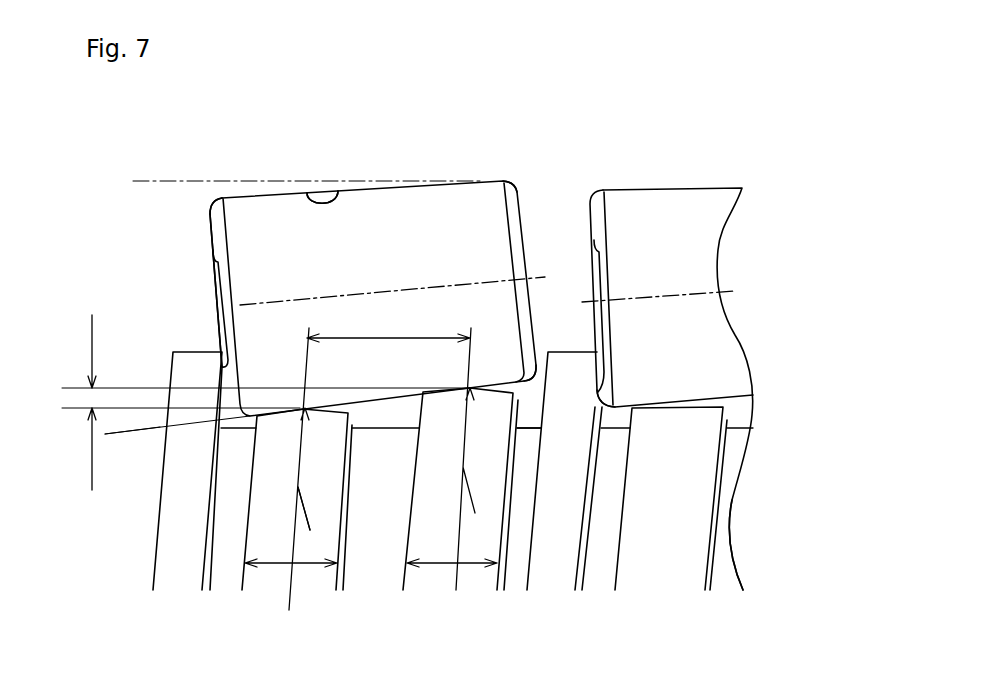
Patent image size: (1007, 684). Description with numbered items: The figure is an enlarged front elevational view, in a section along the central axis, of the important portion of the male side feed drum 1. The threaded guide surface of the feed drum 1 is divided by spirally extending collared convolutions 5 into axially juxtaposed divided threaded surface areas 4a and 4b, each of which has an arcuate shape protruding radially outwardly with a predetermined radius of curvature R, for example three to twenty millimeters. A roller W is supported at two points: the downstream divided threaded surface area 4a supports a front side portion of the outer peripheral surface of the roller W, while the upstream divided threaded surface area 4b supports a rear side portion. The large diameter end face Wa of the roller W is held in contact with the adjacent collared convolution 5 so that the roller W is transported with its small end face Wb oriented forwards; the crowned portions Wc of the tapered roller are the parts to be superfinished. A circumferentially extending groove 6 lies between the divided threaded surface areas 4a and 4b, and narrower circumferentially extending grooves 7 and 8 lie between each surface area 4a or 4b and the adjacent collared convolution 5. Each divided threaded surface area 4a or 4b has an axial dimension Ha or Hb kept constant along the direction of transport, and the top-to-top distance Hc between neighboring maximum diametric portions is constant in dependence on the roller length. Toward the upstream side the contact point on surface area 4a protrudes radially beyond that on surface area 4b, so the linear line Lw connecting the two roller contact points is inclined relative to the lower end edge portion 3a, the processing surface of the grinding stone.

The male side feed drum 1 is at (760, 538).
The lower end edge portion 3a is at (338, 190).
The divided threaded surface area 4a is at (494, 387).
The divided threaded surface area 4b is at (280, 407).
The collared convolution 5 is at (187, 507).
The circumferentially extending groove 6 is at (382, 426).
The circumferentially extending groove 7 is at (523, 427).
The circumferentially extending groove 8 is at (615, 427).
The roller W is at (282, 252).
The large diameter end face Wa is at (210, 232).
The small end face Wb is at (522, 212).
The crowned portion Wc is at (236, 202).
The top-to-top distance Hc is at (383, 336).
The axial dimension Ha is at (470, 566).
The axial dimension Hb is at (275, 563).
The radius of curvature R is at (295, 593).
The linear line Lw is at (127, 433).